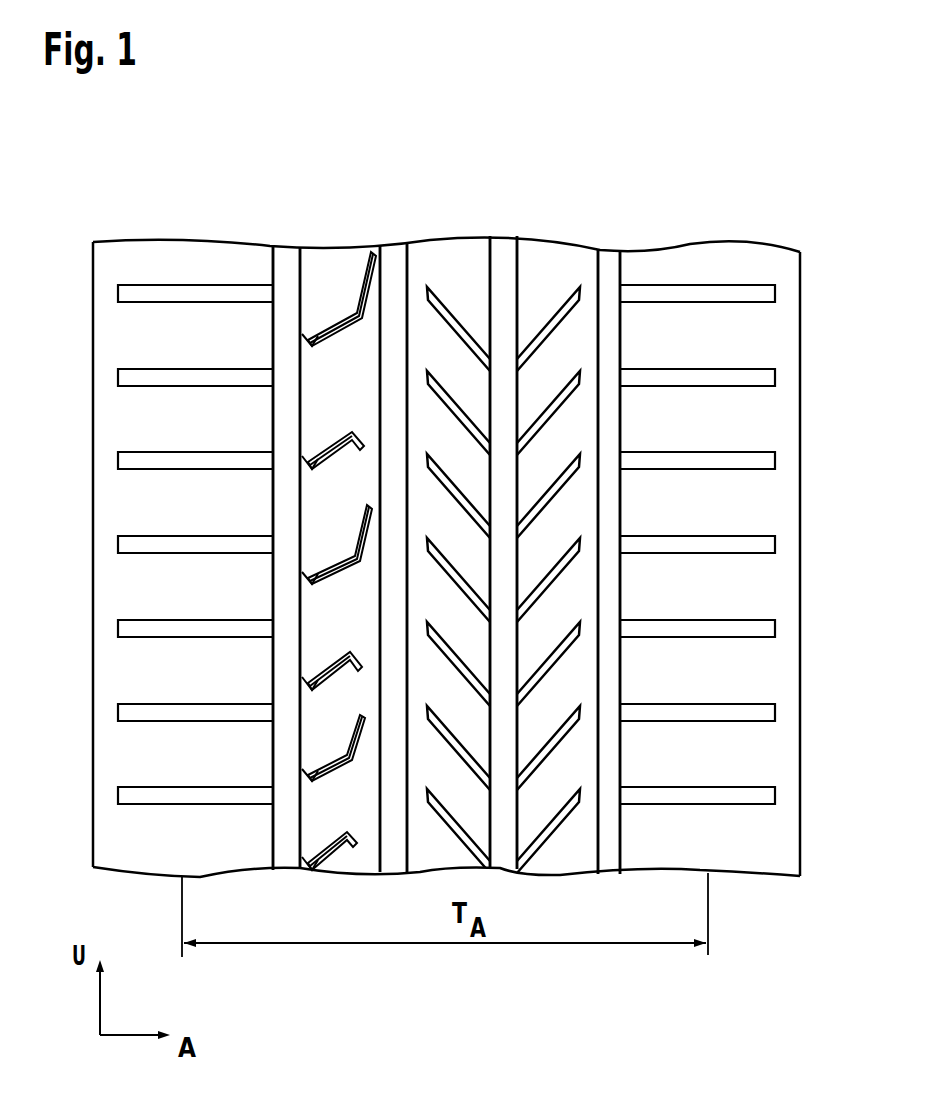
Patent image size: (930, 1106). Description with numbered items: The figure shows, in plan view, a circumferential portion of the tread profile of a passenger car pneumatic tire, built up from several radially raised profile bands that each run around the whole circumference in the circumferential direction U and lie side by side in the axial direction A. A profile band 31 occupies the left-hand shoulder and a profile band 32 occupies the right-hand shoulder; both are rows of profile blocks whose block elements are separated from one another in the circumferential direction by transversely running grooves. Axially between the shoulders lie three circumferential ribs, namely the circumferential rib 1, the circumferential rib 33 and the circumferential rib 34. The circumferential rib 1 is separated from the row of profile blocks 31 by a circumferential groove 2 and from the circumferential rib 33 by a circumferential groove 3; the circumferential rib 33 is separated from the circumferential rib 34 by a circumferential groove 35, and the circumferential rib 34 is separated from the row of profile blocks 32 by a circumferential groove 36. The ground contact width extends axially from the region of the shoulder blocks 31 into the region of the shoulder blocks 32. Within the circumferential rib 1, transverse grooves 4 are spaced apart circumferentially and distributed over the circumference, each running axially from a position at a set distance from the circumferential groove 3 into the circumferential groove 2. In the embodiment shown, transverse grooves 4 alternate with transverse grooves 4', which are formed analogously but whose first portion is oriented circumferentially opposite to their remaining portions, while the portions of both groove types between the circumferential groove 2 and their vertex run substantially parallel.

The circumferential rib 1 is at (335, 280).
The circumferential groove 2 is at (288, 282).
The circumferential groove 3 is at (393, 290).
The transverse groove 4 is at (289, 516).
The transverse groove 4' is at (283, 640).
The profile band 31 is at (185, 278).
The profile band 32 is at (731, 273).
The circumferential rib 33 is at (442, 274).
The circumferential rib 34 is at (558, 281).
The circumferential groove 35 is at (505, 283).
The circumferential groove 36 is at (613, 281).